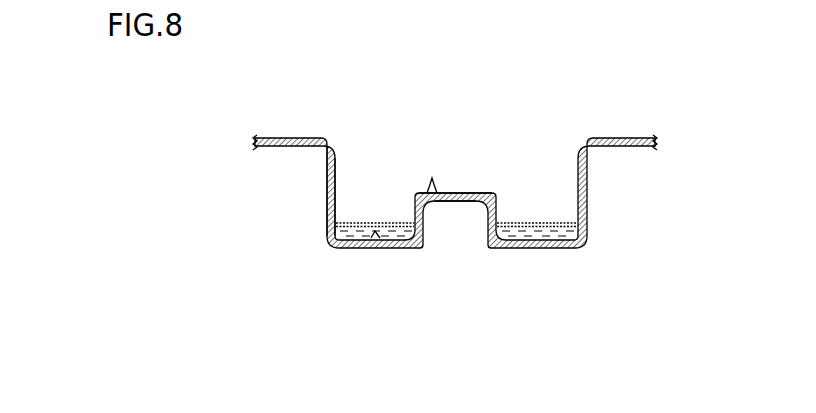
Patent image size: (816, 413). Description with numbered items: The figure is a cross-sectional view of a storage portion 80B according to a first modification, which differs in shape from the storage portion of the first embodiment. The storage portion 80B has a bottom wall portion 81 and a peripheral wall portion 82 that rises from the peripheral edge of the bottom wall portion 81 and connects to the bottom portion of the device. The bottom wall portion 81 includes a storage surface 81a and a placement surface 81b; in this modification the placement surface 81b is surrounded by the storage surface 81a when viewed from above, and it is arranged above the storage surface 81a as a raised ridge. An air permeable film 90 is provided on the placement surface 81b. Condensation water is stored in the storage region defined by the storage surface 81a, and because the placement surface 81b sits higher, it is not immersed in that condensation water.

The storage portion 80B is at (632, 96).
The peripheral wall portion 82 is at (325, 185).
The air permeable film 90 is at (458, 193).
The bottom wall portion 81 is at (460, 333).
The storage surface 81a is at (376, 238).
The placement surface 81b is at (433, 197).